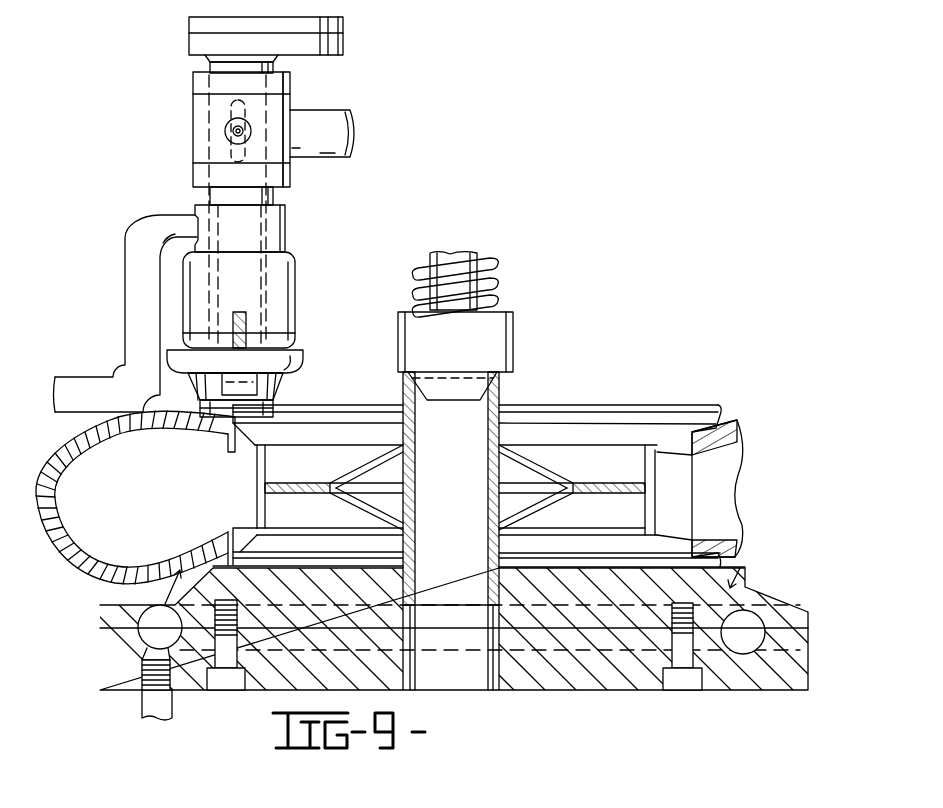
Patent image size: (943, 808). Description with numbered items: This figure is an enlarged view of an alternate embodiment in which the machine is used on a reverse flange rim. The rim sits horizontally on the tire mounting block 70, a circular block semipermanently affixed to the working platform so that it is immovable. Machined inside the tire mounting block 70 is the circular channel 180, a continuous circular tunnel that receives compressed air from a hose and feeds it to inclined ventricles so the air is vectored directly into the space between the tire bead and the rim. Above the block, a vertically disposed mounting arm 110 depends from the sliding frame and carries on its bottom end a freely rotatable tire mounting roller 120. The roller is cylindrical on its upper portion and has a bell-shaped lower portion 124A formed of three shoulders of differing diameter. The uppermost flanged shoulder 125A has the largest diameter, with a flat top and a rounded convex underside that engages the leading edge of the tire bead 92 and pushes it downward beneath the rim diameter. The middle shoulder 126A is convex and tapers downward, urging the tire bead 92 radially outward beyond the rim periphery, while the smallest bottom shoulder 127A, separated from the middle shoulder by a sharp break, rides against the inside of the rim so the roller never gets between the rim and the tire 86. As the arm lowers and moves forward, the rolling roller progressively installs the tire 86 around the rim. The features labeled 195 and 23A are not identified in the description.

The mounting arm 110 is at (203, 63).
The hose 195 is at (197, 407).
The tire mounting roller 120 is at (313, 283).
The spool column 23A is at (252, 287).
The flanged shoulder 125A is at (288, 357).
The middle shoulder 126A is at (284, 384).
The lower bell-shaped portion 124A is at (298, 396).
The bottom shoulder 127A is at (273, 403).
The tire 86 is at (85, 568).
The tire bead 92 is at (228, 450).
The tire mounting block 70 is at (102, 662).
The circular channel 180 is at (148, 622).